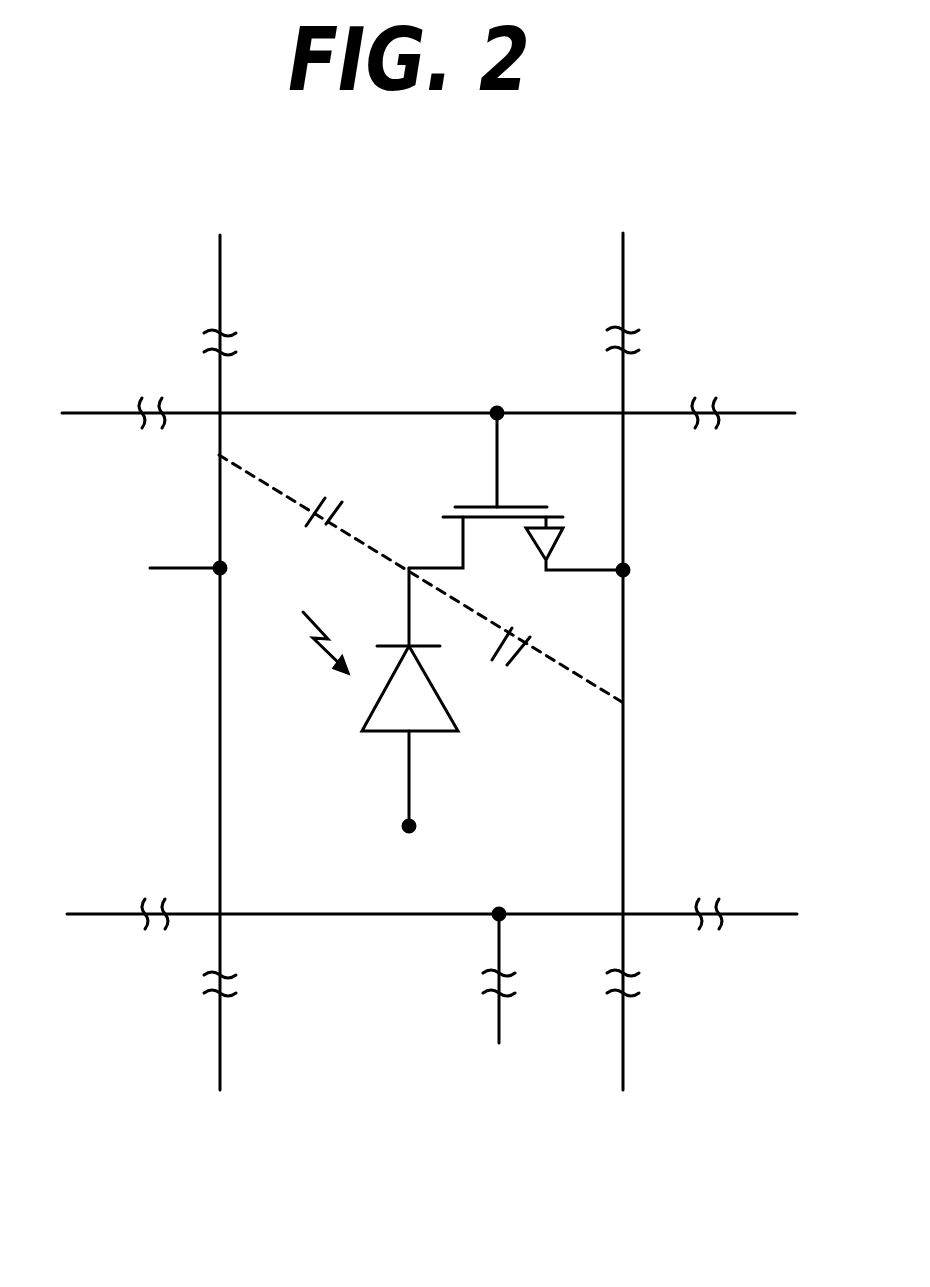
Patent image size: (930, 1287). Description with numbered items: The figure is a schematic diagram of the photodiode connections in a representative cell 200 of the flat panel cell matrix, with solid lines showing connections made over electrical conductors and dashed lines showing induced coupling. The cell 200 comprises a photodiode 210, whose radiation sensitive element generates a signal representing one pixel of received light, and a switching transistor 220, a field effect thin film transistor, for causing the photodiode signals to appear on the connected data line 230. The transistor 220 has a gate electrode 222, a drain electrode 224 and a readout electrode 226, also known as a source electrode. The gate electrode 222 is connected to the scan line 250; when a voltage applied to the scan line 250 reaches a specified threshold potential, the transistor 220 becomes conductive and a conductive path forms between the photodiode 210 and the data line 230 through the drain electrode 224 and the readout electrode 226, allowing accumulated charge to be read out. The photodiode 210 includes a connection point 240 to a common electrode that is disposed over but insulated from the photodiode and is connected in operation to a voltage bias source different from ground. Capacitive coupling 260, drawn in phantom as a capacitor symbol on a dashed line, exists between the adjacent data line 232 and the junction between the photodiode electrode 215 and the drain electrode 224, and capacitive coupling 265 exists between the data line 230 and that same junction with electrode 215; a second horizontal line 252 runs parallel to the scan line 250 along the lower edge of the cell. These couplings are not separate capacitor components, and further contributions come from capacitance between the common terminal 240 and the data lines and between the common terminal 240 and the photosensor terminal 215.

The representative cell 200 is at (290, 877).
The photodiode 210 is at (356, 691).
The photodiode electrode 215 is at (409, 618).
The switching transistor 220 is at (543, 480).
The gate electrode 222 is at (497, 465).
The drain electrode 224 is at (463, 535).
The readout electrode 226 is at (548, 555).
The data line 230 is at (626, 1042).
The data line 232 is at (223, 1022).
The connection point 240 is at (415, 828).
The scan line 250 is at (118, 413).
The row line 252 is at (118, 914).
The capacitive coupling 260 is at (325, 497).
The capacitive coupling 265 is at (522, 652).